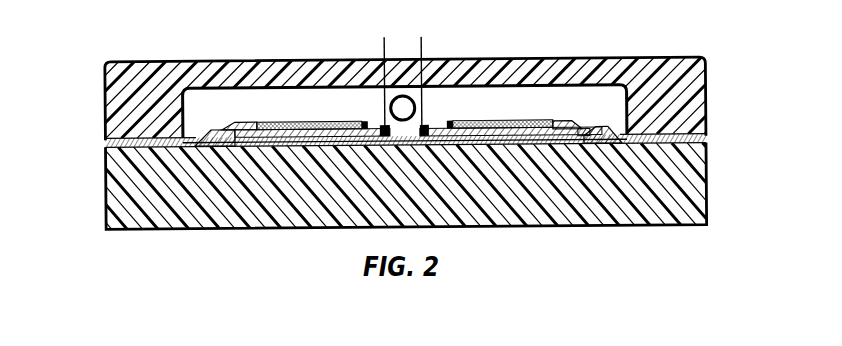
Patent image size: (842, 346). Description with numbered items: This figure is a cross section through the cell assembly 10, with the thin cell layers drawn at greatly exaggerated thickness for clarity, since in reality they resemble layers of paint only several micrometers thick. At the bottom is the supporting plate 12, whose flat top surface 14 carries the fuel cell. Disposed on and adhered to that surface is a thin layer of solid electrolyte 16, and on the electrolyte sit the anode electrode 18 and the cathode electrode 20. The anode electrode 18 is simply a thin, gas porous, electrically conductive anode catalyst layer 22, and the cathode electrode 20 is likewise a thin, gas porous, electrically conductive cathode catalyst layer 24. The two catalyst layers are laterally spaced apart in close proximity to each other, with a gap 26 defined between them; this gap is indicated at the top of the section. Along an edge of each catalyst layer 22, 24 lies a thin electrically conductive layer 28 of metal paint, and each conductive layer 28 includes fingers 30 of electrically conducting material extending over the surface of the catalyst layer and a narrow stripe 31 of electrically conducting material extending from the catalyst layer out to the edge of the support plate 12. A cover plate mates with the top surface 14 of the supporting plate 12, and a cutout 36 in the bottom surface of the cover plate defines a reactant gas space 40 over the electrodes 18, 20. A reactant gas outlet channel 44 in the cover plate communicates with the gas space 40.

The cell assembly 10 is at (92, 86).
The supporting plate 12 is at (573, 223).
The flat top surface 14 is at (584, 135).
The solid electrolyte layer 16 is at (567, 127).
The anode electrode 18 is at (366, 120).
The cathode electrode 20 is at (456, 121).
The anode catalyst layer 22 is at (267, 123).
The cathode catalyst layer 24 is at (530, 114).
The gap 26 is at (385, 42).
The electrically conductive layer 28 is at (220, 129).
The fingers 30 is at (301, 121).
The narrow stripe 31 is at (107, 140).
The cutout 36 is at (325, 90).
The reactant gas space 40 is at (212, 86).
The reactant gas outlet channel 44 is at (414, 104).